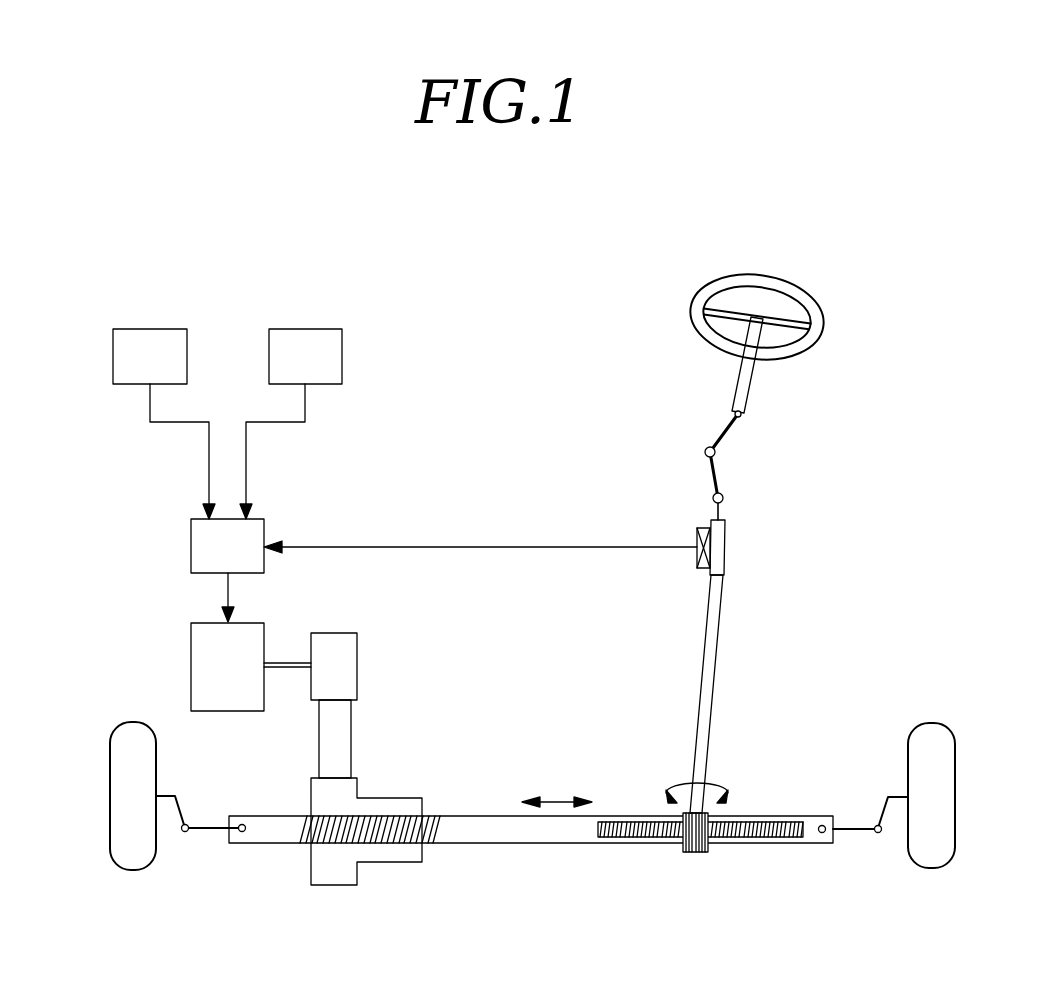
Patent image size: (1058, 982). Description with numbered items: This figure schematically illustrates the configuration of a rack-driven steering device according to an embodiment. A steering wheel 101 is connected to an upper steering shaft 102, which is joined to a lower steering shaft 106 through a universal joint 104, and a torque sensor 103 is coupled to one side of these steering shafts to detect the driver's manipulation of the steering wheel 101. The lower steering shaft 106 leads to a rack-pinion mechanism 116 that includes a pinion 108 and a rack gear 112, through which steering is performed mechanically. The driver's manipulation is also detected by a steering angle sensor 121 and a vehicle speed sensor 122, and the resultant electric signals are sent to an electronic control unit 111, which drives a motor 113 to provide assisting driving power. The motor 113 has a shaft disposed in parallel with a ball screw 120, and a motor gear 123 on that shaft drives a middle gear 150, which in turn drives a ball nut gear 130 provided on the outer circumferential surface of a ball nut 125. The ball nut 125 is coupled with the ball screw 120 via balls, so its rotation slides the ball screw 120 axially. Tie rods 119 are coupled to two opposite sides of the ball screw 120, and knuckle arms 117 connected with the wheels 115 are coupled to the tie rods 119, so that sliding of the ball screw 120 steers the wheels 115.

The steering wheel 101 is at (714, 283).
The upper steering shaft 102 is at (745, 378).
The torque sensor 103 is at (697, 535).
The universal joint 104 is at (716, 452).
The lower steering shaft 106 is at (715, 608).
The pinion 108 is at (695, 855).
The electronic control unit (ECU) 111 is at (191, 553).
The rack gear 112 is at (760, 843).
The motor 113 is at (197, 665).
The wheels 115 is at (120, 781).
The rack-pinion mechanism 116 is at (707, 947).
The knuckle arms 117 is at (180, 804).
The tie rods 119 is at (210, 832).
The ball screw 120 is at (533, 833).
The steering angle sensor 121 is at (150, 329).
The vehicle speed sensor 122 is at (305, 329).
The motor gear 123 is at (342, 662).
The ball nut 125 is at (410, 803).
The ball nut gear 130 is at (332, 873).
The middle gear 150 is at (345, 715).